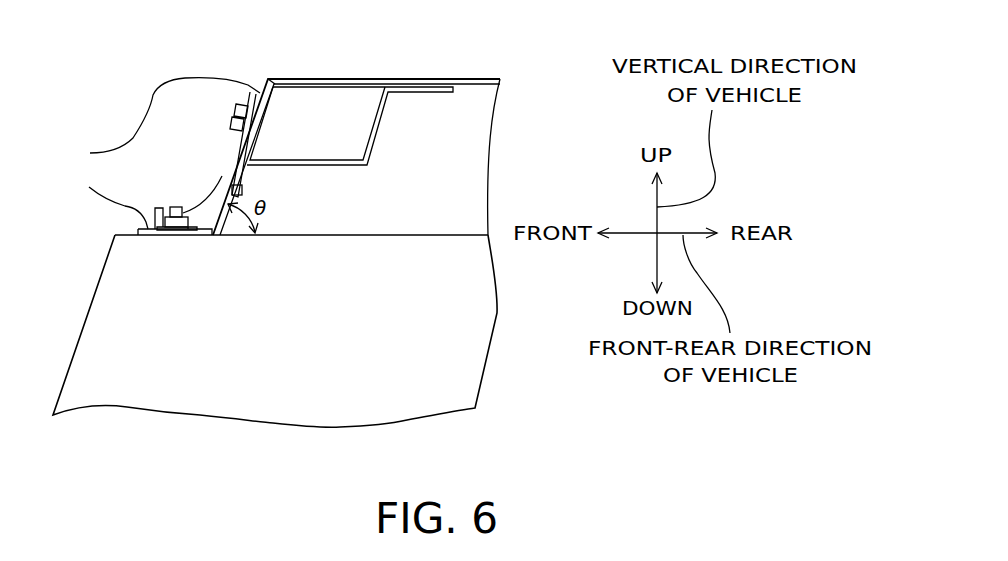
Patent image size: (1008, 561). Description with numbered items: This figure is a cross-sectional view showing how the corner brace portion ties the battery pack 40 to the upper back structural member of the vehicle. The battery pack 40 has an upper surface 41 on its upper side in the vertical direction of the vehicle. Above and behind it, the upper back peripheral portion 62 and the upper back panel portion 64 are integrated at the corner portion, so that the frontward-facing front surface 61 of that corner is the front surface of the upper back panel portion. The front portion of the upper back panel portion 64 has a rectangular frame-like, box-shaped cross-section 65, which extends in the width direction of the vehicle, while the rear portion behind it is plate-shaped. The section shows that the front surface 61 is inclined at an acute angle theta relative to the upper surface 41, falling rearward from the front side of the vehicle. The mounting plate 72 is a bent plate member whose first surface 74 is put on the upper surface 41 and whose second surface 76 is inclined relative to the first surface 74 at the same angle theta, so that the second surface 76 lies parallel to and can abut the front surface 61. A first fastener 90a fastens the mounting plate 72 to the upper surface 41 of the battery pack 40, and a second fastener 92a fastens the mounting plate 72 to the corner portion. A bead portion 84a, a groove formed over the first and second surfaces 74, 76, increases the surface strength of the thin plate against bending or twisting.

The battery pack 40 is at (294, 346).
The upper surface of the battery pack 41 is at (439, 233).
The front surface of the corner portion 61 is at (262, 86).
The upper back peripheral portion 62 is at (370, 125).
The upper back panel portion 64 is at (470, 79).
The box-shaped cross-section 65 is at (329, 135).
The mounting plate 72 is at (137, 153).
The first surface 74 is at (105, 200).
The second surface 76 is at (161, 123).
The bead portion 84a is at (215, 190).
The first fastener 90a is at (168, 208).
The second fastener 92a is at (237, 109).